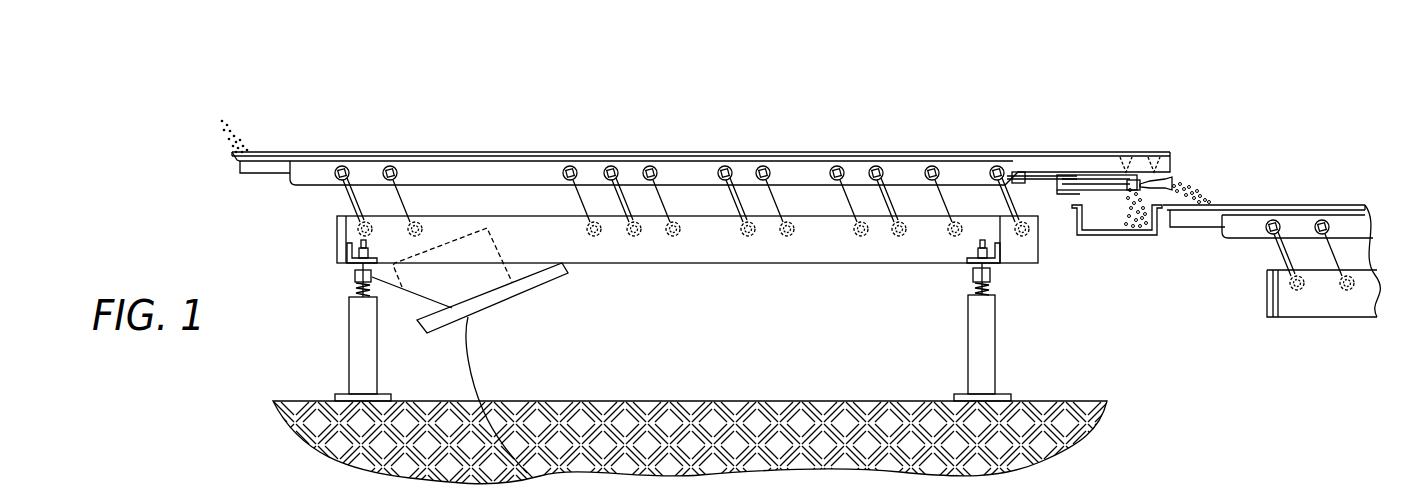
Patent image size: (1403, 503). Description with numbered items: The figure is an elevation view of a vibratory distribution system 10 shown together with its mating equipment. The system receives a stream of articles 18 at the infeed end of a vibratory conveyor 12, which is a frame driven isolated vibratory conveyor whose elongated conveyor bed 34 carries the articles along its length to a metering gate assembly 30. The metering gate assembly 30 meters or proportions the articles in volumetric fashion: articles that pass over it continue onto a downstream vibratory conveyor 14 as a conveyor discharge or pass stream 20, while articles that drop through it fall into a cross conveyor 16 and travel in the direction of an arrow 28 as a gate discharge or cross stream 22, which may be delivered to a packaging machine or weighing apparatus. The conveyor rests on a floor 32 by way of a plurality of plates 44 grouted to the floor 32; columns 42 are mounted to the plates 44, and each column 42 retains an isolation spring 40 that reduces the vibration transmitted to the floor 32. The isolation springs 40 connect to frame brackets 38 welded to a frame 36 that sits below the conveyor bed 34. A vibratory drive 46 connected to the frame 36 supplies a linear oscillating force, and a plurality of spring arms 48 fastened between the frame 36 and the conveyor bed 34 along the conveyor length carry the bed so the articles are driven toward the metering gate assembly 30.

The vibratory distribution system 10 is at (785, 100).
The vibratory conveyor 12 is at (495, 144).
The downstream vibratory conveyor 14 is at (1260, 207).
The cross conveyor 16 is at (1100, 236).
The stream of articles 18 is at (224, 117).
The conveyor discharge or pass stream 20 is at (1188, 181).
The gate discharge or cross stream 22 is at (1140, 229).
The arrow 28 is at (1120, 490).
The metering gate assembly 30 is at (1087, 161).
The floor 32 is at (342, 461).
The conveyor bed 34 is at (573, 151).
The frame 36 is at (336, 237).
The frame brackets 38 is at (1003, 245).
The isolation spring 40 is at (987, 288).
The columns 42 is at (348, 320).
The plates 44 is at (1000, 393).
The vibratory drive 46 is at (527, 473).
The spring arms 48 is at (345, 197).